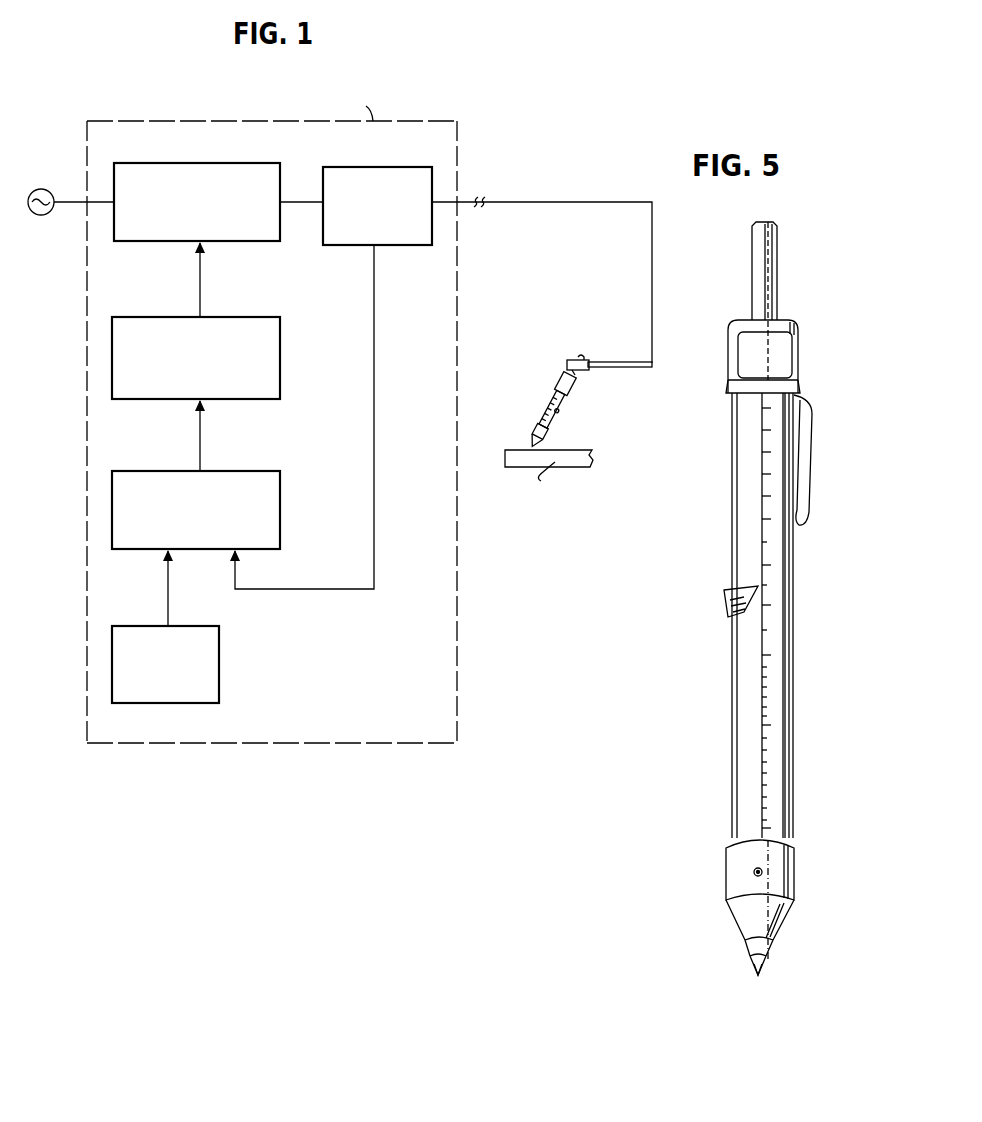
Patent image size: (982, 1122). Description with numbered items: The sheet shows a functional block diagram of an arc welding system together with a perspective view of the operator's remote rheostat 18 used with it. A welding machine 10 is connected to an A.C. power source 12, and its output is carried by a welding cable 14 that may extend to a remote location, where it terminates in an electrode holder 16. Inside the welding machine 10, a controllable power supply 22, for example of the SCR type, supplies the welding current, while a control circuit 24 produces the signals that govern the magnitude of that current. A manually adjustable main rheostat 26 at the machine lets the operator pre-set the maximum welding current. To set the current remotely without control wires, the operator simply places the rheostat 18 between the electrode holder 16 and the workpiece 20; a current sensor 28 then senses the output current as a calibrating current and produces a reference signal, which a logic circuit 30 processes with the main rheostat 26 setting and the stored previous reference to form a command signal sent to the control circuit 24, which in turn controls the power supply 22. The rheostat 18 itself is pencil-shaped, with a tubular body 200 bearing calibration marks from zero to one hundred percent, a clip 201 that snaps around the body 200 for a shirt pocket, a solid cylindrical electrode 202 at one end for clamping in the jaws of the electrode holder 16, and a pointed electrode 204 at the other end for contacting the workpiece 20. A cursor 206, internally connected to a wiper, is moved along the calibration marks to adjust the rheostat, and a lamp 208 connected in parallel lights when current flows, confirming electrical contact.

In FIG. 1, the welding machine 10 is at (160, 121).
In FIG. 1, the A.C. power source 12 is at (54, 172).
In FIG. 1, the welding cable 14 is at (540, 202).
In FIG. 1, the electrode holder 16 is at (611, 362).
In FIG. 1, the operator's rheostat 18 is at (546, 418).
In FIG. 5, the operator's rheostat 18 is at (707, 665).
In FIG. 1, the workpiece 20 is at (535, 463).
In FIG. 1, the controllable power supply 22 is at (257, 145).
In FIG. 1, the control circuit 24 is at (277, 317).
In FIG. 1, the main rheostat 26 is at (219, 678).
In FIG. 1, the current sensor 28 is at (410, 145).
In FIG. 1, the logic circuit 30 is at (251, 471).
In FIG. 5, the tubular body 200 is at (745, 505).
In FIG. 5, the clip 201 is at (809, 452).
In FIG. 1, the solid cylindrical electrode 202 is at (578, 358).
In FIG. 5, the solid cylindrical electrode 202 is at (757, 273).
In FIG. 5, the pointed electrode 204 is at (766, 962).
In FIG. 5, the cursor 206 is at (729, 610).
In FIG. 5, the lamp 208 is at (753, 872).